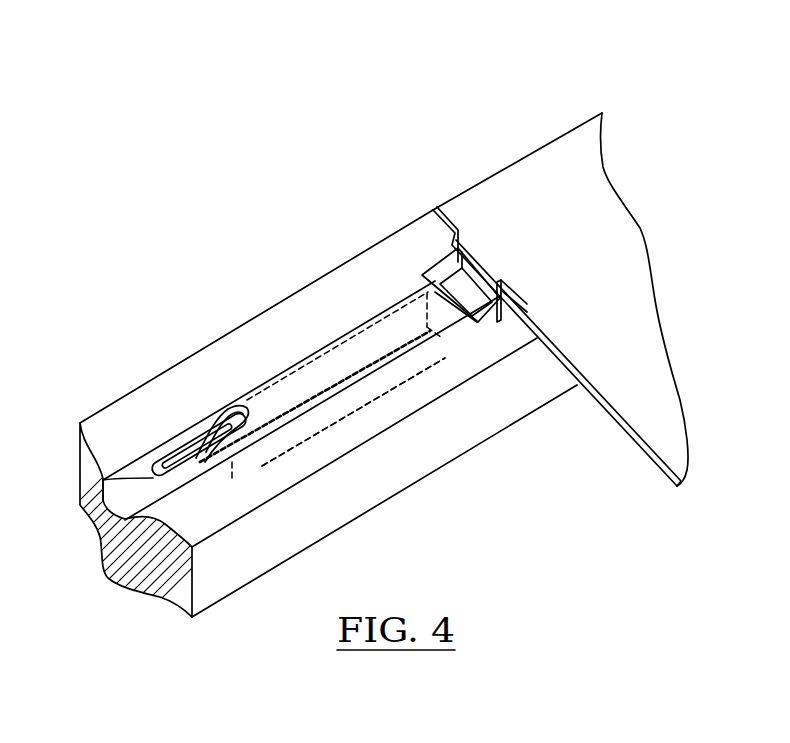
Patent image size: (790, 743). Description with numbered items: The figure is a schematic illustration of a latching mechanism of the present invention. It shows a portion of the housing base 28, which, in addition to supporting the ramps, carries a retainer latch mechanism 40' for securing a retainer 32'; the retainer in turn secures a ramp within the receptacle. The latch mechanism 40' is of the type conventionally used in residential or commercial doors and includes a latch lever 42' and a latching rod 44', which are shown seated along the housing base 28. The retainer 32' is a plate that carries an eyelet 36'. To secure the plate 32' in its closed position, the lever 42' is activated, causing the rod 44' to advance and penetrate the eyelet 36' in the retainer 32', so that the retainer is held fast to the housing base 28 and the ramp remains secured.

The housing base 28 is at (113, 400).
The latch lever 42' is at (66, 464).
The retainer latch mechanism 40' is at (199, 383).
The latching rod 44' is at (353, 348).
The eyelet 36' is at (450, 244).
The retainer 32' is at (560, 315).